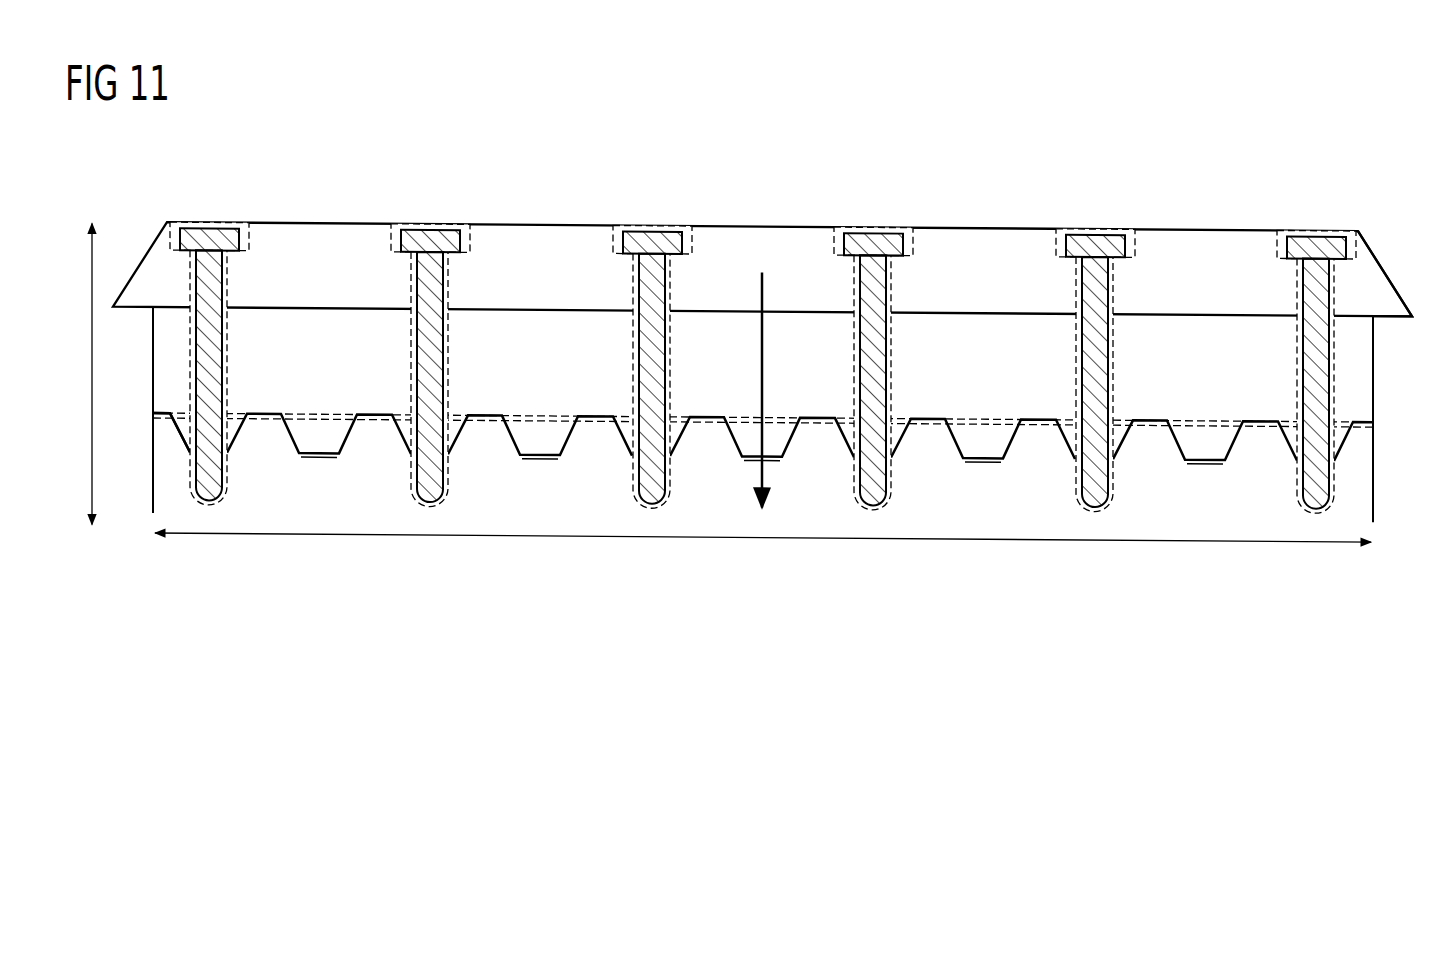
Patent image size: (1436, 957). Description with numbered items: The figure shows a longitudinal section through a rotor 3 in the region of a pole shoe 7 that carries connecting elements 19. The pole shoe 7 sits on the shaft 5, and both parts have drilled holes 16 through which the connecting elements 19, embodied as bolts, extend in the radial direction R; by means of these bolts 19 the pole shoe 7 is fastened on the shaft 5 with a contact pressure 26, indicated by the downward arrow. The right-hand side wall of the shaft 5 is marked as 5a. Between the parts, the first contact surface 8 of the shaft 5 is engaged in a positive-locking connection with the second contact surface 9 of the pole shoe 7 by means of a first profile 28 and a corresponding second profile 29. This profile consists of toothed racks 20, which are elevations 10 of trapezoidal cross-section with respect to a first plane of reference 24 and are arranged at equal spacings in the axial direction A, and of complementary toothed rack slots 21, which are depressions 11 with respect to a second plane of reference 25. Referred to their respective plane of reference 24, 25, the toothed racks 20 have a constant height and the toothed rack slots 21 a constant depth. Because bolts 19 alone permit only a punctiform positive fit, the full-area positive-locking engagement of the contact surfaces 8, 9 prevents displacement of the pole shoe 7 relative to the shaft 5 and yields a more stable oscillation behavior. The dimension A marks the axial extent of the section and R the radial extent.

The rotor 3 is at (1240, 194).
The shaft 5 is at (176, 505).
The side wall 5a is at (1363, 479).
The pole shoe 7 is at (1363, 334).
The first contact surface 8 is at (153, 428).
The second contact surface 9 is at (153, 395).
The elevations 10 is at (319, 441).
The toothed racks 20 is at (319, 441).
The depressions 11 is at (540, 435).
The toothed rack slots 21 is at (540, 435).
The drilled holes 16 is at (176, 238).
The connecting elements 19 is at (427, 245).
The first plane of reference 24 is at (1205, 455).
The second plane of reference 25 is at (1205, 423).
The contact pressure 26 is at (763, 333).
The first profile 28 is at (492, 426).
The second profile 29 is at (312, 441).
The radial direction R is at (80, 373).
The axial direction A is at (763, 552).